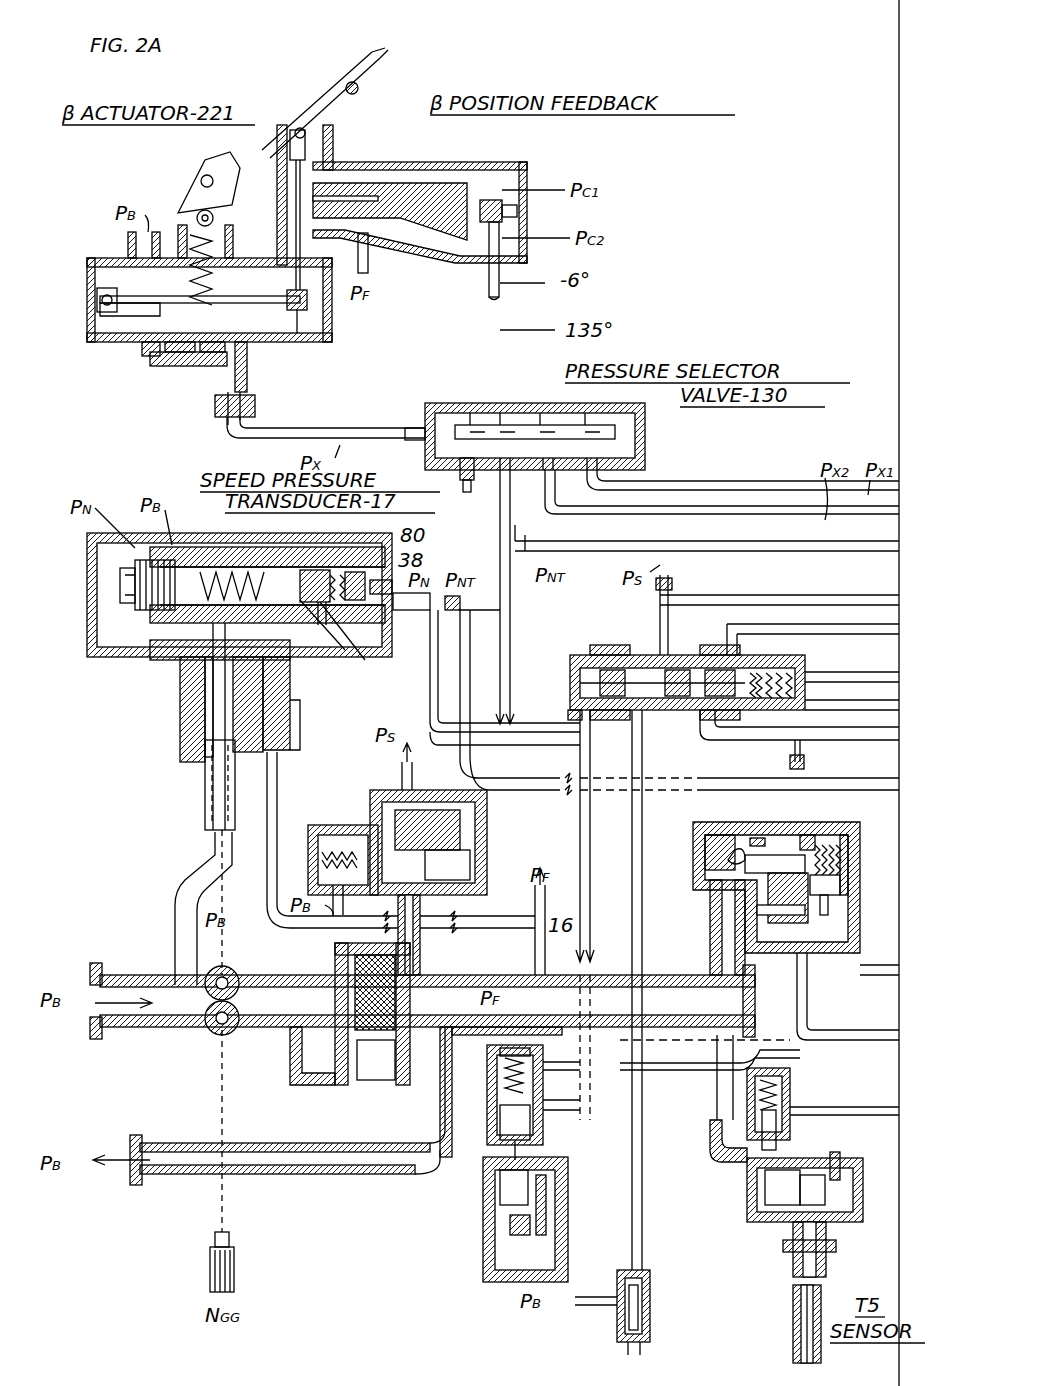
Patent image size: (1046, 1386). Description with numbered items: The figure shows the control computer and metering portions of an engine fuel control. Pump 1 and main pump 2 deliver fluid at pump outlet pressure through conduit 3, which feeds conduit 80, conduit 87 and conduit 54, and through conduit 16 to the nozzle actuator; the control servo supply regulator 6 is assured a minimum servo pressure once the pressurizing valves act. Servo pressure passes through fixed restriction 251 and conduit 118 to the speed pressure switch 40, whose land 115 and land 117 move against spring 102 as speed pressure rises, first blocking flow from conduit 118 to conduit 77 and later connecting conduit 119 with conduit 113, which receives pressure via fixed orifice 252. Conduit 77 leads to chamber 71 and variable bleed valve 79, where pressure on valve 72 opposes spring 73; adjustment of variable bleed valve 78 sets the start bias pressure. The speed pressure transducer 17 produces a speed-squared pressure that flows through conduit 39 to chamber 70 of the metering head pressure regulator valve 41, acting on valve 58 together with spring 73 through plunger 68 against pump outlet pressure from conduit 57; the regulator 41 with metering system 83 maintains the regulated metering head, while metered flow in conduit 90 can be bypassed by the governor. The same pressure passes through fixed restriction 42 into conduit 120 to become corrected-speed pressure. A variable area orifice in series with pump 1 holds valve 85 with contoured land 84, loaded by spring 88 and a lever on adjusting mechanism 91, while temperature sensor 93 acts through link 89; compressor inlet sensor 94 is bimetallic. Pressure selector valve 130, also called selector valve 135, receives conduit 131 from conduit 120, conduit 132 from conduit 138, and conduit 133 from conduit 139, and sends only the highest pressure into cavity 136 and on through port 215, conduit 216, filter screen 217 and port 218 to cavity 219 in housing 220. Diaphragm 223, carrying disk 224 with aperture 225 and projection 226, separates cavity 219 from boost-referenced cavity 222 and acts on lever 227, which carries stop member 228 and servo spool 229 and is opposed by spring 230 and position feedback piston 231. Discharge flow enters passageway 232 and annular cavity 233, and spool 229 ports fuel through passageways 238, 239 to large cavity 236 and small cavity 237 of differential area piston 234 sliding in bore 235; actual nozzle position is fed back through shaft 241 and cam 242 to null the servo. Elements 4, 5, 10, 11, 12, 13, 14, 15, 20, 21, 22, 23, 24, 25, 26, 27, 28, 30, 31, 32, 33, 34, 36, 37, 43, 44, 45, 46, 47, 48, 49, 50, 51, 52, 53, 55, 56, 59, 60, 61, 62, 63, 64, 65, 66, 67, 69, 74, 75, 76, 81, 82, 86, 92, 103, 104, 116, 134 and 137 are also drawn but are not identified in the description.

The pump 1 is at (212, 1028).
The main pump 2 is at (192, 1010).
The conduit 3 is at (440, 1010).
The filter 4 is at (355, 948).
The passage 5 is at (420, 935).
The control servo supply regulator 6 is at (488, 838).
The spring 10 is at (318, 856).
The spring housing 11 is at (328, 825).
The vent stem 12 is at (412, 788).
The piston 13 is at (470, 858).
The chamber 14 is at (450, 800).
The insert 15 is at (420, 810).
The conduit 16 is at (368, 266).
The speed pressure transducer 17 is at (97, 590).
The wall 20 is at (180, 700).
The wall 21 is at (185, 680).
The passage 22 is at (280, 772).
The boss 23 is at (292, 715).
The rod 24 is at (205, 735).
The rod 25 is at (235, 683).
The lever 26 is at (360, 655).
The cylinder 27 is at (190, 547).
The plunger 28 is at (215, 852).
The spring 30 is at (300, 560).
The adjusting screw 31 is at (165, 612).
The lock nut 32 is at (120, 590).
The valve 33 is at (370, 572).
The port 34 is at (385, 625).
The passage 36 is at (322, 630).
The cover 37 is at (90, 545).
The conduit 39 is at (590, 738).
The speed pressure switch 40 is at (570, 655).
The metering head pressure regulator valve 41 is at (568, 1275).
The fixed restriction 42 is at (458, 612).
The passage 43 is at (735, 918).
The valve housing 44 is at (860, 832).
The spool 45 is at (770, 855).
The block 46 is at (735, 878).
The passage 47 is at (757, 930).
The wall 48 is at (848, 840).
The ball 49 is at (728, 862).
The port 50 is at (806, 835).
The spring 51 is at (830, 845).
The block 52 is at (705, 845).
The seat 53 is at (752, 840).
The conduit 54 is at (879, 971).
The chamber 55 is at (845, 882).
The stem 56 is at (830, 900).
The conduit 57 is at (568, 1230).
The valve 58 is at (490, 1185).
The bypass pipe 59 is at (262, 1152).
The sleeve 60 is at (548, 1200).
The piston 61 is at (530, 1180).
The seat 62 is at (518, 1262).
The ball 63 is at (520, 1250).
The spring 64 is at (508, 1225).
The guide 65 is at (532, 1230).
The stem 66 is at (515, 1238).
The passage 67 is at (500, 1200).
The plunger 68 is at (485, 1130).
The passage 69 is at (545, 1120).
The chamber 70 is at (540, 1148).
The chamber 71 is at (500, 1115).
The valve 72 is at (497, 1095).
The spring 73 is at (520, 1056).
The cap 74 is at (500, 1052).
The line 75 is at (797, 985).
The line 76 is at (561, 1050).
The conduit 77 is at (645, 738).
The variable bleed valve 78 is at (650, 1303).
The variable bleed valve 79 is at (650, 1283).
The conduit 80 is at (717, 1083).
The passage 81 is at (745, 1150).
The elbow 82 is at (710, 1143).
The metering system 83 is at (845, 1222).
The contoured land 84 is at (790, 1090).
The valve 85 is at (762, 1140).
The line 86 is at (844, 1093).
The conduit 87 is at (895, 1110).
The spring 88 is at (790, 1070).
The link 89 is at (765, 1180).
The chamber 90 is at (800, 1195).
The adjusting mechanism 91 is at (850, 1170).
The housing 92 is at (863, 1193).
The temperature sensor 93 is at (793, 1268).
The compressor inlet sensor 94 is at (838, 1152).
The spring 102 is at (790, 655).
The line 103 is at (810, 676).
The line 104 is at (850, 690).
The conduit 113 is at (760, 740).
The land 115 is at (630, 655).
The spool 116 is at (690, 668).
The land 117 is at (779, 668).
The conduit 118 is at (770, 600).
The conduit 119 is at (810, 624).
The conduit 120 is at (735, 541).
The pressure selector valve 130 is at (541, 414).
The conduit 131 is at (500, 520).
The conduit 132 is at (548, 475).
The conduit 133 is at (605, 472).
The fitting 134 is at (468, 492).
The selector valve 135 is at (646, 433).
The cavity 136 is at (440, 403).
The spool 137 is at (545, 412).
The conduit 138 is at (697, 514).
The conduit 139 is at (795, 506).
The port 215 is at (415, 428).
The conduit 216 is at (235, 436).
The filter screen 217 is at (256, 412).
The port 218 is at (250, 398).
The cavity 219 is at (170, 362).
The housing 220 is at (95, 340).
The cavity 222 is at (120, 262).
The diaphragm 223 is at (142, 352).
The disk 224 is at (185, 365).
The flow restrictive aperture 225 is at (212, 365).
The projection 226 is at (285, 298).
The lever 227 is at (100, 312).
The stop member 228 is at (325, 340).
The servo spool 229 is at (290, 176).
The spring 230 is at (198, 273).
The position feedback piston 231 is at (232, 250).
The passageway 232 is at (330, 195).
The annular cavity 233 is at (290, 196).
The differential area piston 234 is at (518, 211).
The bore 235 is at (525, 170).
The large area variable volume cavity 236 is at (485, 180).
The small area variable volume cavity 237 is at (478, 240).
The passageway 238 is at (395, 178).
The passageway 239 is at (428, 250).
The nozzle position feedback shaft 241 is at (345, 86).
The cam 242 is at (180, 200).
The fixed restriction 251 is at (672, 580).
The fixed orifice 252 is at (819, 753).